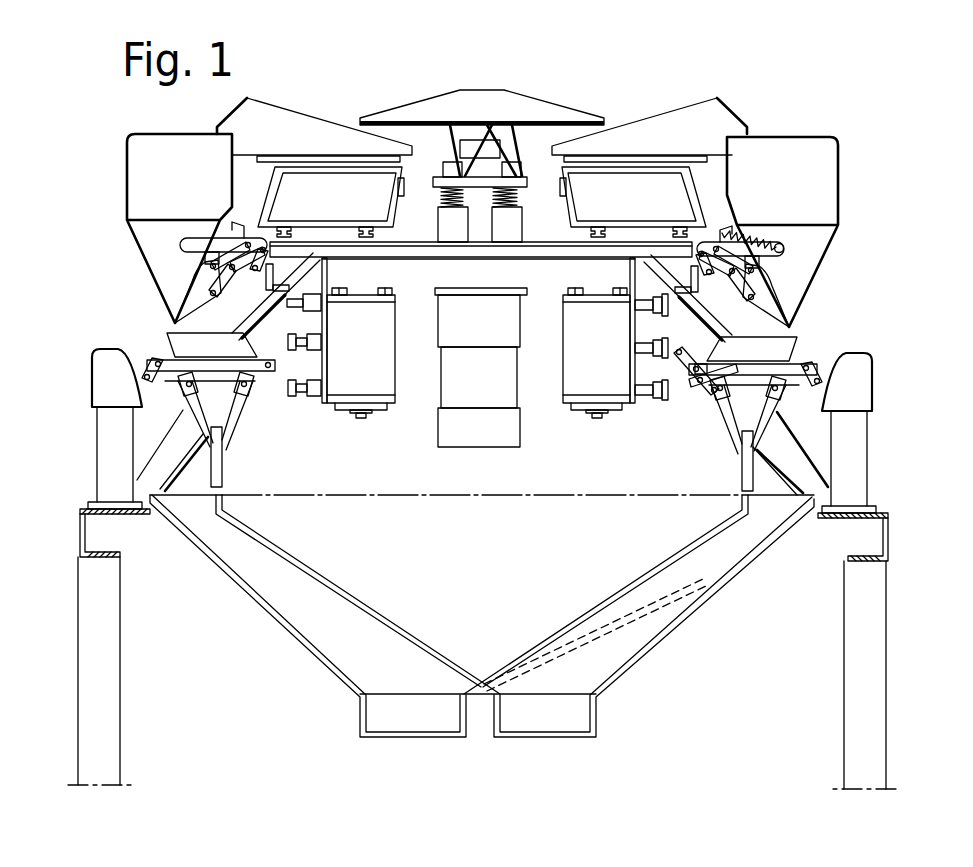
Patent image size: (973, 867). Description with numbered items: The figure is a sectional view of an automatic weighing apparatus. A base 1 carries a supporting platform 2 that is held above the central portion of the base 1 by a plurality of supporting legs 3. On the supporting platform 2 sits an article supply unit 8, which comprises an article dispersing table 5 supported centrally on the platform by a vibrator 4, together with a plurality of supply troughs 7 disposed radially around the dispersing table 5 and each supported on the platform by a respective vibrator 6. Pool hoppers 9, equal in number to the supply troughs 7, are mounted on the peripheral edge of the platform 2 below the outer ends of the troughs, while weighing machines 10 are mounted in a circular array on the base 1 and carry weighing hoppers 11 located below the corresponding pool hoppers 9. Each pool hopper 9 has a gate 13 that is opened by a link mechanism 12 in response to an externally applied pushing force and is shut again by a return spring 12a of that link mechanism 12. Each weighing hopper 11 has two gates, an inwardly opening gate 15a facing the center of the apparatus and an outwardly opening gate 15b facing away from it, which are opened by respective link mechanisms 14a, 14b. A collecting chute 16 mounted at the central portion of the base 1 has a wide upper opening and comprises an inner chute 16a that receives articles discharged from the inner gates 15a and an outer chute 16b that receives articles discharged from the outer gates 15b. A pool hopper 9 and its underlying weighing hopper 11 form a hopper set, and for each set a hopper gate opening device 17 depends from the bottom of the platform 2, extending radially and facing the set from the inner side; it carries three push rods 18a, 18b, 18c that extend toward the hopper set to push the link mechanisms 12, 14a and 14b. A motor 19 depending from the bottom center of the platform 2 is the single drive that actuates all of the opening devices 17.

The base 1 is at (886, 518).
The supporting platform 2 is at (418, 240).
The supporting legs 3 is at (178, 450).
The vibrator 4 is at (506, 150).
The article dispersing table 5 is at (537, 108).
The vibrators 6 is at (282, 205).
The supply troughs 7 is at (300, 120).
The article supply unit 8 is at (496, 149).
The pool hoppers 9 is at (152, 242).
The weighing machines 10 is at (92, 443).
The weighing hoppers 11 is at (168, 343).
The link mechanism 12 is at (238, 262).
The return spring 12a is at (762, 236).
The gate 13 is at (196, 298).
The link mechanism 14a is at (698, 396).
The link mechanism 14b is at (802, 370).
The inwardly opening gate 15a is at (237, 425).
The outwardly opening gate 15b is at (177, 392).
The collecting chute 16 is at (482, 616).
The inner chute 16a is at (296, 570).
The outer chute 16b is at (286, 607).
The hopper gate opening device 17 is at (339, 392).
The push rod 18a is at (306, 310).
The push rod 18b is at (304, 351).
The push rod 18c is at (304, 398).
The motor 19 is at (486, 447).